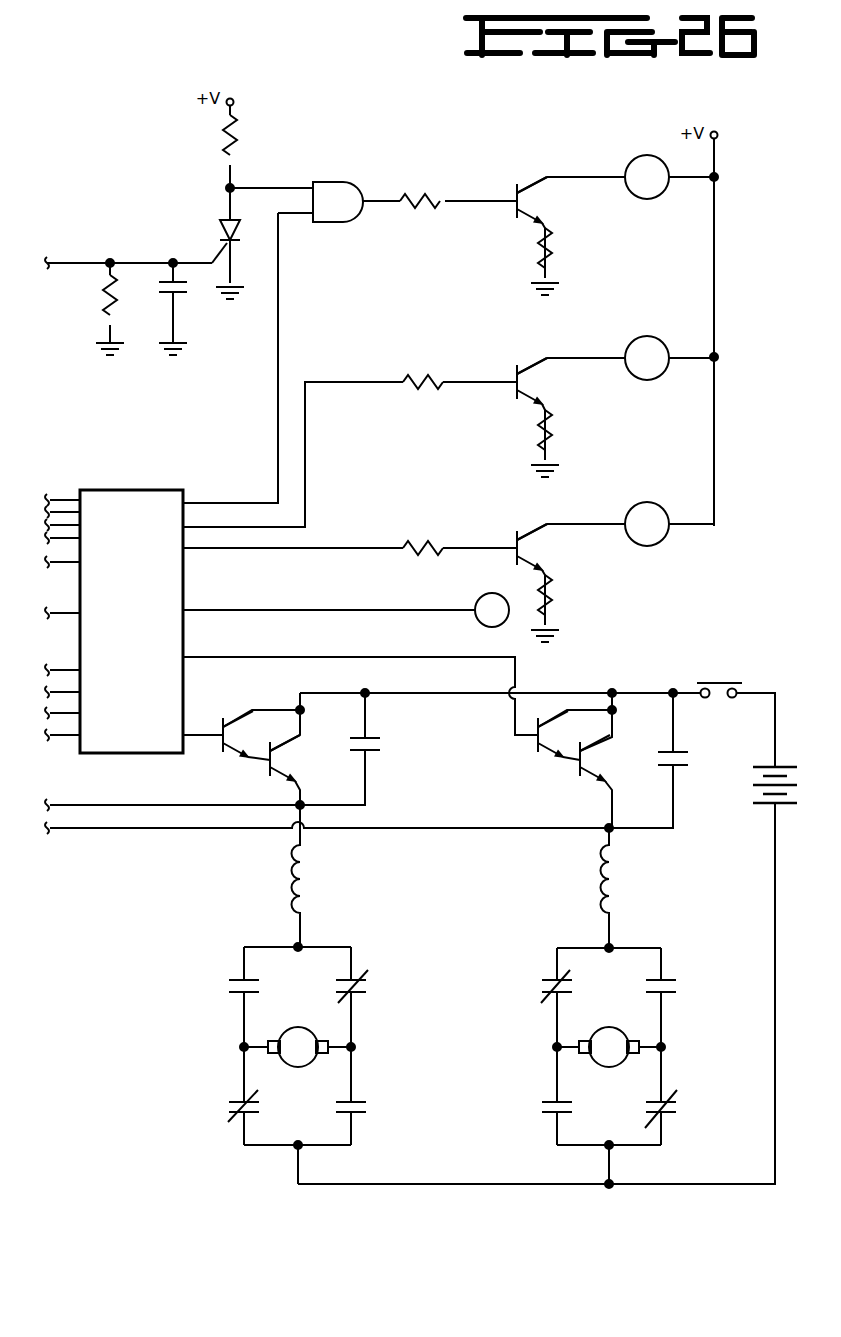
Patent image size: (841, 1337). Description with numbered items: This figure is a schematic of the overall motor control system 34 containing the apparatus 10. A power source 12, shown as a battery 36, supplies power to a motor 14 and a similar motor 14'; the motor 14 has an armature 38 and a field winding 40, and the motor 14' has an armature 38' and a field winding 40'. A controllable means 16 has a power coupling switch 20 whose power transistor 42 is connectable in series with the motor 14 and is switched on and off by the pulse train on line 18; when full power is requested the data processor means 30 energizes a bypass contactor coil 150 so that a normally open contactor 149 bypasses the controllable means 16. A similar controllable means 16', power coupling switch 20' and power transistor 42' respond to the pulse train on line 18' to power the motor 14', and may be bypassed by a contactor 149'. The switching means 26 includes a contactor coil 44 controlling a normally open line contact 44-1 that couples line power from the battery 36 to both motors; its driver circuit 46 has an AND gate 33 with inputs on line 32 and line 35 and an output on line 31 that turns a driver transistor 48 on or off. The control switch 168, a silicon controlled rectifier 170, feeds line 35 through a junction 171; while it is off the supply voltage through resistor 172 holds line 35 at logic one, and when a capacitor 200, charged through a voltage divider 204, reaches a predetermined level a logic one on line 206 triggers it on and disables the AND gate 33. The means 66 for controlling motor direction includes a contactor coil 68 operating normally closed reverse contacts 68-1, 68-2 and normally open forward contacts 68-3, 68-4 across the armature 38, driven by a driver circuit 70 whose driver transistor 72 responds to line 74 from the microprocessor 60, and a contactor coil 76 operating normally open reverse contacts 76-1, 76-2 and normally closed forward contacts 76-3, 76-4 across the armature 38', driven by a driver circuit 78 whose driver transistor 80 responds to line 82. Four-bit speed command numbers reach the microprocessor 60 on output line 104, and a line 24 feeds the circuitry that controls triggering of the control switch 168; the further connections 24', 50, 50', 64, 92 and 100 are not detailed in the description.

The apparatus 10 is at (150, 64).
The power source 12 is at (763, 818).
The motor 14 is at (631, 1041).
The motor 14' is at (325, 1039).
The controllable means 16 is at (554, 758).
The controllable means 16' is at (260, 749).
The line 18 is at (360, 678).
The line 18' is at (212, 705).
The power coupling switch 20 is at (551, 742).
The power coupling switch 20' is at (245, 748).
The line 24 is at (62, 756).
The input line 24' is at (88, 749).
The switching means 26 is at (369, 164).
The data processor means 30 is at (224, 596).
The line 31 is at (380, 200).
The line 32 is at (279, 321).
The AND gate 33 is at (348, 180).
The motor control system 34 is at (721, 576).
The line 35 is at (263, 187).
The battery 36 is at (766, 764).
The armature 38 is at (609, 1033).
The armature 38' is at (297, 1033).
The field winding 40 is at (571, 888).
The field winding 40' is at (259, 876).
The power transistor 42 is at (627, 720).
The power transistor 42' is at (482, 724).
The contactor coil 44 is at (627, 169).
The line contact 44-1 is at (723, 681).
The driver circuit 46 is at (512, 157).
The driver transistor 48 is at (513, 197).
The line 50 is at (329, 840).
The line 50' is at (174, 811).
The microprocessor 60 is at (143, 666).
The input line 64 is at (62, 612).
The direction controlling means 66 is at (729, 372).
The contactor coil 68 is at (632, 340).
The reverse contact 68-1 is at (551, 978).
The reverse contact 68-2 is at (677, 1102).
The forward contact 68-3 is at (673, 980).
The forward contact 68-4 is at (548, 1102).
The driver circuit 70 is at (499, 360).
The driver transistor 72 is at (511, 388).
The line 74 is at (307, 440).
The contactor coil 76 is at (639, 504).
The reverse contact 76-1 is at (239, 978).
The reverse contact 76-2 is at (362, 1102).
The forward contact 76-3 is at (361, 980).
The forward contact 76-4 is at (232, 1101).
The driver circuit 78 is at (501, 527).
The driver transistor 80 is at (509, 554).
The line 82 is at (352, 549).
The input line 92 is at (62, 669).
The input line 100 is at (72, 693).
The output line 104 is at (75, 538).
The bypass contactor 149 is at (676, 758).
The bypass contactor 149' is at (376, 749).
The bypass contactor coil 150 is at (490, 627).
The control switch 168 is at (187, 205).
The silicon controlled rectifier 170 is at (241, 245).
The junction 171 is at (232, 185).
The resistor 172 is at (222, 144).
The capacitor 200 is at (182, 300).
The voltage divider 204 is at (88, 311).
The line 206 is at (200, 262).